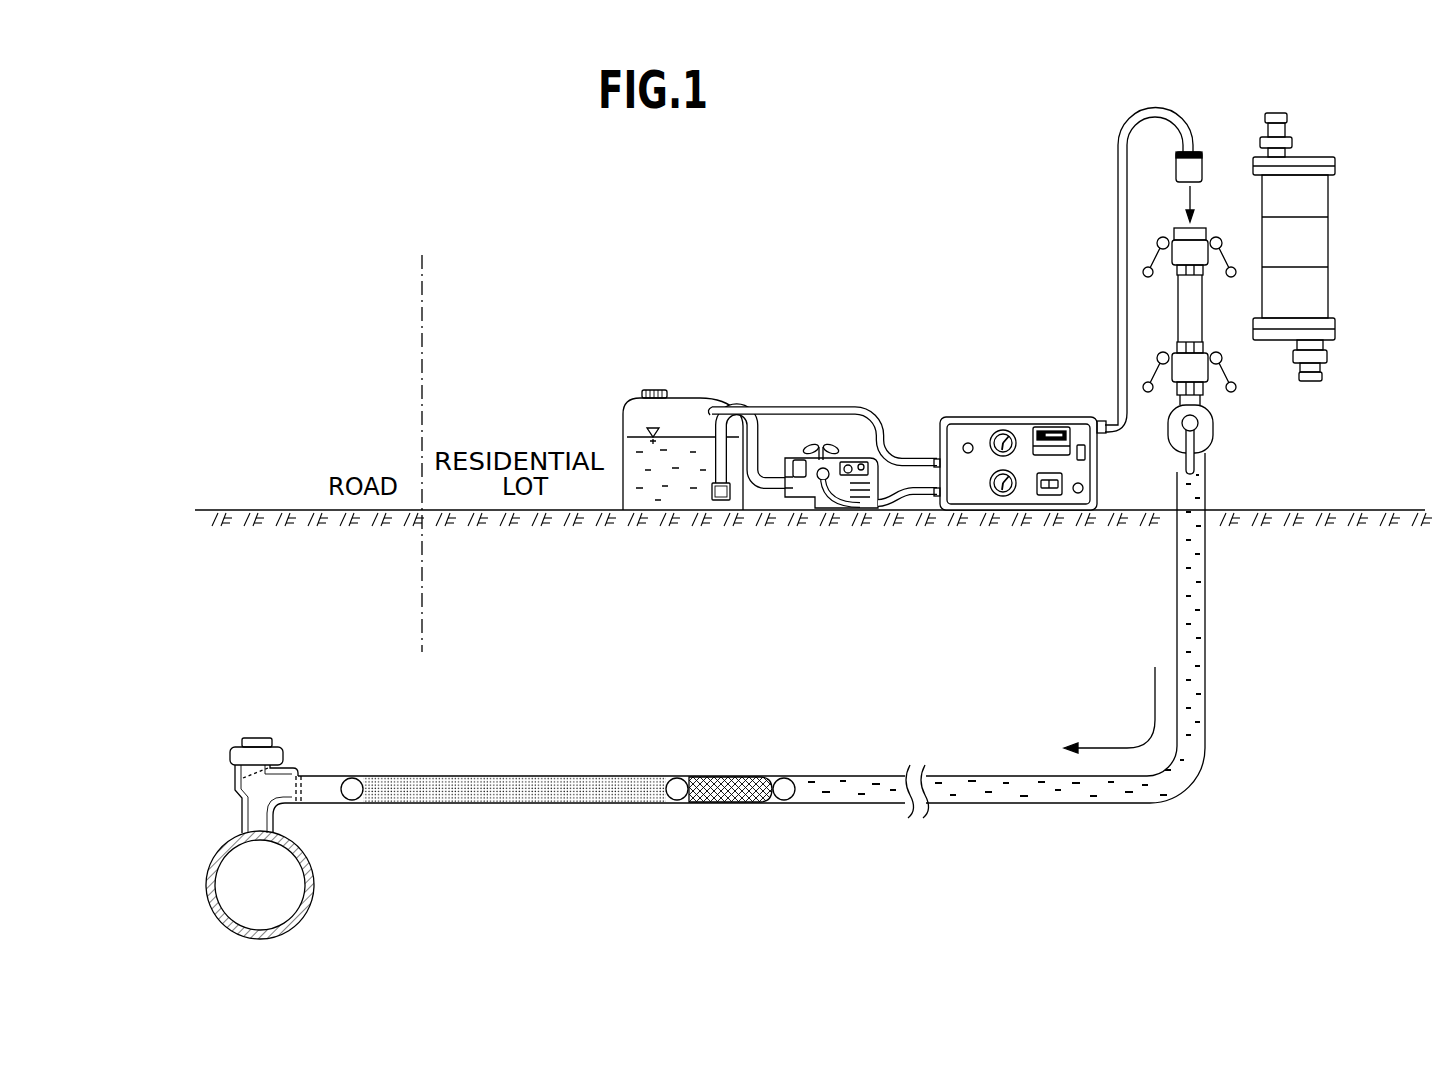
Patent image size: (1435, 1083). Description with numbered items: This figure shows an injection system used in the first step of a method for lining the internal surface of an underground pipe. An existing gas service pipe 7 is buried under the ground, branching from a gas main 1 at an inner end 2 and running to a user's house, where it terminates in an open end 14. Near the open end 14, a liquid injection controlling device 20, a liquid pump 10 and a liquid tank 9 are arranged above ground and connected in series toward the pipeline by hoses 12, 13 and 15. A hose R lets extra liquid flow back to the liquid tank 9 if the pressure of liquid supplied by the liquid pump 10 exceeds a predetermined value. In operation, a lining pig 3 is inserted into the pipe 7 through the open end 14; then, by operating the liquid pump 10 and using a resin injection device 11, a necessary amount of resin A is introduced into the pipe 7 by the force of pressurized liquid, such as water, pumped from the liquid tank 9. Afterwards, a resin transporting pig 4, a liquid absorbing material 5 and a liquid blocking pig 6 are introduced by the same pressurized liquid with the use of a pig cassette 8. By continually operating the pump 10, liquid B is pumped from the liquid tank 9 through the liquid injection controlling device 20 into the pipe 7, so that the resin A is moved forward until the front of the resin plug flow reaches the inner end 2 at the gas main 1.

The gas main 1 is at (292, 918).
The inner end 2 is at (242, 768).
The lining pig 3 is at (352, 797).
The resin transporting pig 4 is at (679, 797).
The liquid absorbing material 5 is at (700, 780).
The liquid blocking pig 6 is at (785, 783).
The gas service pipe 7 is at (323, 774).
The pig cassette 8 is at (1193, 312).
The liquid tank 9 is at (635, 408).
The liquid pump 10 is at (808, 500).
The resin injection device 11 is at (1307, 188).
The hose 12 is at (762, 410).
The hose 13 is at (902, 470).
The open end 14 is at (1208, 453).
The hose 15 is at (1192, 125).
The liquid injection controlling device 20 is at (1020, 410).
The resin A is at (470, 784).
The liquid B is at (1208, 655).
The hose R is at (836, 407).